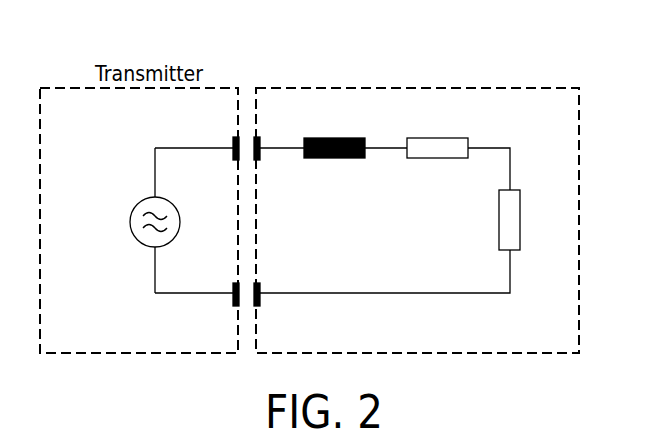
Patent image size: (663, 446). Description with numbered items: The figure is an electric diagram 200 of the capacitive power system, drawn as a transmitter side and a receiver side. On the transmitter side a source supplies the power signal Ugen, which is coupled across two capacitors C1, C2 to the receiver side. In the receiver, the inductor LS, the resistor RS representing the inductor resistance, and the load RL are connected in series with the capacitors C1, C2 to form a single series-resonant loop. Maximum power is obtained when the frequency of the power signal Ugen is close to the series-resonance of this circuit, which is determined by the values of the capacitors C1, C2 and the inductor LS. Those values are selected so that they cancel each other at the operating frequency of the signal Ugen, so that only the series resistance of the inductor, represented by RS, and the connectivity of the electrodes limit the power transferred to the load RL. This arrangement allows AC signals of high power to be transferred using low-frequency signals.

The electric diagram 200 is at (536, 87).
The capacitor C1 is at (263, 160).
The capacitor C2 is at (263, 282).
The inductor LS is at (334, 133).
The resistor RS is at (437, 133).
The load RL is at (526, 220).
The power signal Ugen is at (118, 197).